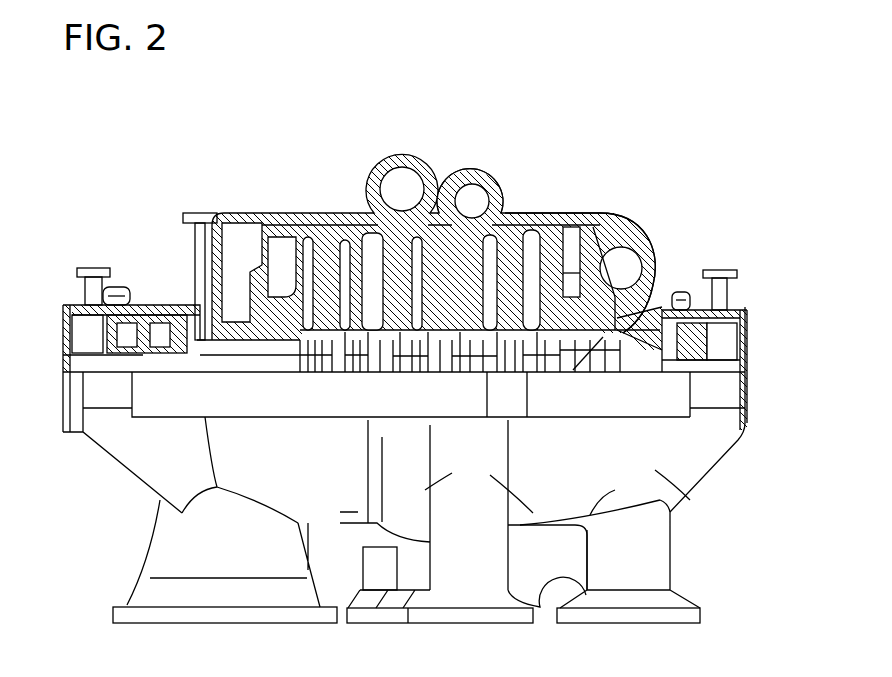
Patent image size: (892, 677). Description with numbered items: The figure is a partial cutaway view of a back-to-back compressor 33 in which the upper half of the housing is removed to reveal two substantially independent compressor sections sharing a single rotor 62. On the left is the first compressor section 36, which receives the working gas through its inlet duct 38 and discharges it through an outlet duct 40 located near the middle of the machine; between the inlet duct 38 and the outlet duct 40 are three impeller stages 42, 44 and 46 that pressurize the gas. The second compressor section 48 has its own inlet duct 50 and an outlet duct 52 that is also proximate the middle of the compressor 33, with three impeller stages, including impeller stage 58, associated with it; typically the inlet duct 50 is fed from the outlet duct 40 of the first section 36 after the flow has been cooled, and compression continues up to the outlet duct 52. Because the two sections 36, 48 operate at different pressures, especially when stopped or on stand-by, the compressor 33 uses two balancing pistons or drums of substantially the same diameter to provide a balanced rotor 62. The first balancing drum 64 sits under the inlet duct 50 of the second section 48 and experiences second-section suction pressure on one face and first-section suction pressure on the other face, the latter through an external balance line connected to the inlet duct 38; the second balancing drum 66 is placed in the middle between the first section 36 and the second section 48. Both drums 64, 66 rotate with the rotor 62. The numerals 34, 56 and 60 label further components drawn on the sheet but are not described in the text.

The back-to-back compressor 33 is at (742, 79).
The base / pedestal 34 is at (130, 460).
The first compressor section 36 is at (275, 204).
The inlet duct 38 is at (240, 242).
The outlet duct 40 is at (400, 178).
The impeller stage 42 is at (316, 240).
The impeller stage 44 is at (344, 226).
The impeller stage 46 is at (411, 232).
The second compressor section 48 is at (553, 207).
The inlet duct 50 is at (625, 272).
The outlet duct 52 is at (474, 195).
The impeller 56 is at (474, 240).
The impeller stage 58 is at (506, 290).
The discharge wall block 60 is at (568, 230).
The rotor 62 is at (641, 312).
The first balancing piston or drum 64 is at (700, 322).
The second balancing piston or drum 66 is at (436, 250).